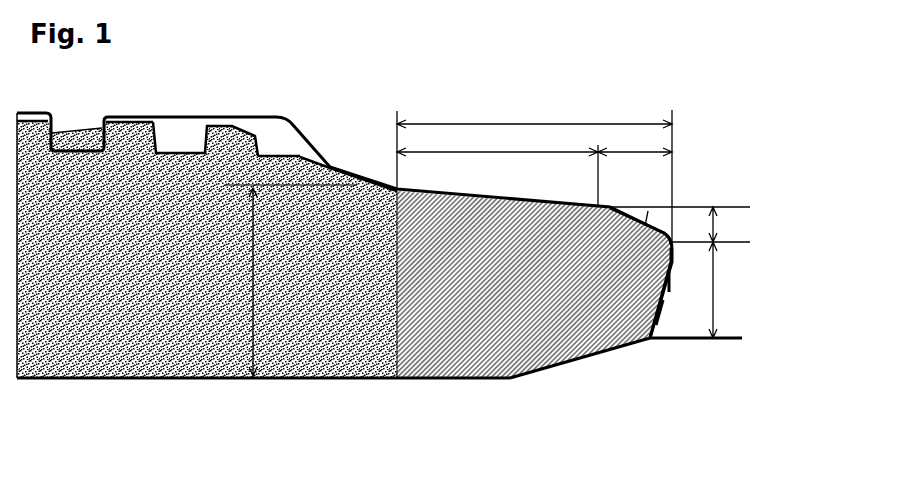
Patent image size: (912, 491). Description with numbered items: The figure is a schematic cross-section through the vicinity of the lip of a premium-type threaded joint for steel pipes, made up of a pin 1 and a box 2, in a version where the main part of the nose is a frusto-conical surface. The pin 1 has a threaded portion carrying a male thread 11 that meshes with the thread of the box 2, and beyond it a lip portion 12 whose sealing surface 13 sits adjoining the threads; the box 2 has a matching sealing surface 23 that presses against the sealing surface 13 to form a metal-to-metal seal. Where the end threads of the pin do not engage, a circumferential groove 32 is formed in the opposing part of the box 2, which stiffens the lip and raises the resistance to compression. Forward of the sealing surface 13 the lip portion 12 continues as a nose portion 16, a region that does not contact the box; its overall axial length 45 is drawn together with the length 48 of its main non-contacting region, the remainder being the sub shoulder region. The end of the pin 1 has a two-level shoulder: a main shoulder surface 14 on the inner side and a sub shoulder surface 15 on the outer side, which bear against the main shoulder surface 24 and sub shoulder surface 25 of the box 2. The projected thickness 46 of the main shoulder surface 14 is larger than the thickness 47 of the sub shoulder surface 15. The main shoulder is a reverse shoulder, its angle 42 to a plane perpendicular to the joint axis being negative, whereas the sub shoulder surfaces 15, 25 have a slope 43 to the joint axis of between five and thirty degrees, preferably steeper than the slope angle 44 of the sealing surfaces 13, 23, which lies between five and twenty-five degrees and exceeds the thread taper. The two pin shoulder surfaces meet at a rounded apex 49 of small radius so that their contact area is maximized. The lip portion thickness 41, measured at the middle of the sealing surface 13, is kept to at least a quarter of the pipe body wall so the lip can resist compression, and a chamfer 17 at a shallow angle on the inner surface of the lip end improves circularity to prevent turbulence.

The pin 1 is at (207, 245).
The box 2 is at (379, 214).
The male thread 11 is at (128, 137).
The lip portion 12 is at (263, 334).
The sealing surface 13 is at (365, 190).
The main shoulder surface 14 is at (657, 298).
The sub shoulder surface 15 is at (636, 228).
The nose portion 16 is at (534, 284).
The chamfer 17 is at (600, 353).
The sealing surface 23 is at (330, 237).
The main shoulder surface 24 is at (667, 282).
The sub shoulder surface 25 is at (630, 222).
The circumferential groove 32 is at (188, 133).
The lip portion thickness 41 is at (286, 280).
The angle of main shoulder surface 42 is at (660, 315).
The slope of sub shoulder surfaces 43 is at (659, 221).
The slope angle of sealing surfaces 44 is at (285, 170).
The length of nose portion 45 is at (534, 173).
The thickness of main shoulder surface 46 is at (727, 290).
The thickness of sub shoulder surface 47 is at (680, 224).
The length of non-contacting main region of nose portion 48 is at (497, 174).
The rounded apex 49 is at (635, 151).